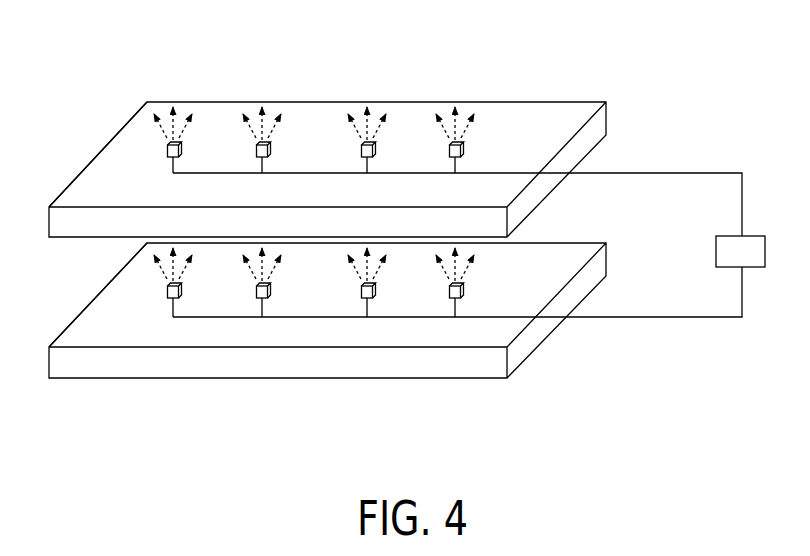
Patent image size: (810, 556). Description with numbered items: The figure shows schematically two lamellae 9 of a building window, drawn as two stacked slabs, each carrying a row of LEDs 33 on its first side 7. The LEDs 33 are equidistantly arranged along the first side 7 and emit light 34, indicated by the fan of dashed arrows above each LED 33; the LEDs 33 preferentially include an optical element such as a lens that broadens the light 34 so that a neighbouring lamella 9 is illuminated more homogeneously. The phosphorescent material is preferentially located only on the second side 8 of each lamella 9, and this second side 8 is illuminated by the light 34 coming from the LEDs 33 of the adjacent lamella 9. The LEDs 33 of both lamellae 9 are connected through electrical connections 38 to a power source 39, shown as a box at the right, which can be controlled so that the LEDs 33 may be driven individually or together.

The first side 7 is at (533, 126).
The second side 8 is at (312, 249).
The lamella 9 is at (130, 120).
The LED 33 is at (160, 148).
The light 34 is at (186, 105).
The electrical connections 38 is at (670, 175).
The power source 39 is at (758, 268).